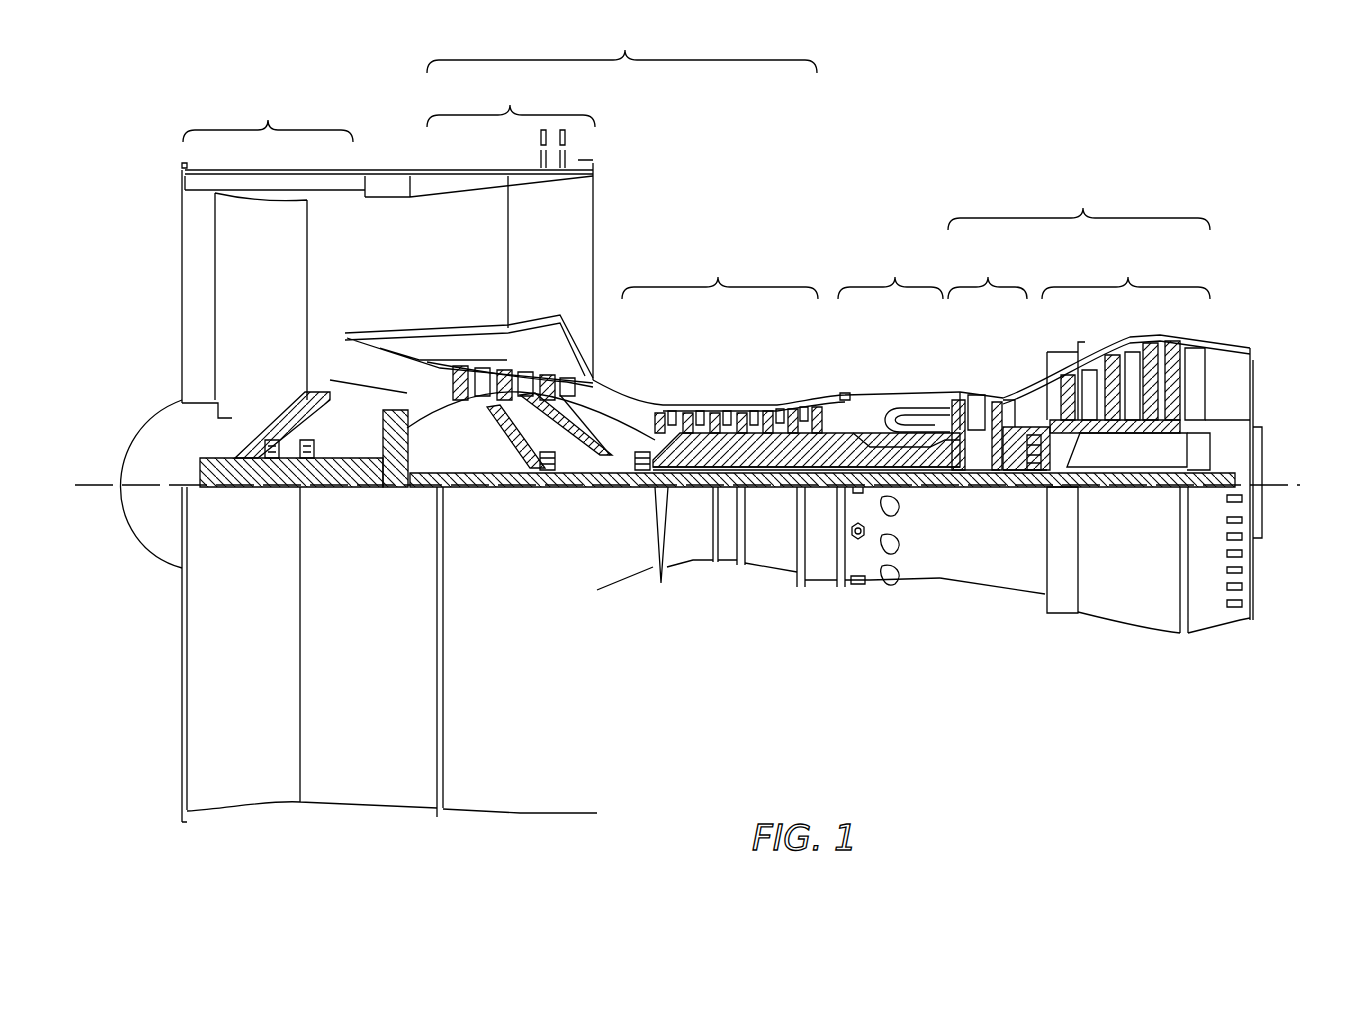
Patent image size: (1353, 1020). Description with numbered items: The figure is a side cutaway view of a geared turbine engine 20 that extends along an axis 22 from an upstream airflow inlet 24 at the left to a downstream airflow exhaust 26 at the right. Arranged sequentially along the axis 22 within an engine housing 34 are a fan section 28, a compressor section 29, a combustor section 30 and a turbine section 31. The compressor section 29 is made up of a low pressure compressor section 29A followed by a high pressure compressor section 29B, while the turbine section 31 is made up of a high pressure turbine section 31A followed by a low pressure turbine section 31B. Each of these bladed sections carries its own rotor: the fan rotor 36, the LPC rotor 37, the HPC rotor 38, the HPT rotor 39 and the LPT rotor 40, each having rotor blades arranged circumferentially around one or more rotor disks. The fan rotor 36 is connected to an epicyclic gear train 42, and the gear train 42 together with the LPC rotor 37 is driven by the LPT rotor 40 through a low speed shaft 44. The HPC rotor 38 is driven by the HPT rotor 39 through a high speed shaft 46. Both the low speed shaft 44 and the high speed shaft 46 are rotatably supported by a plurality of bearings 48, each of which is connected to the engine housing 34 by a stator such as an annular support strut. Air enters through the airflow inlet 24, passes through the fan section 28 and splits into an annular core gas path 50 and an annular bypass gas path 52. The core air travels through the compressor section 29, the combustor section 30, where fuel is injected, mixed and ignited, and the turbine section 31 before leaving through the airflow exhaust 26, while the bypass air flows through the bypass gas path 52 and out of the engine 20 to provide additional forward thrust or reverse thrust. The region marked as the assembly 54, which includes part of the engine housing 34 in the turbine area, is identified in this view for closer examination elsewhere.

The geared turbine engine 20 is at (137, 138).
The axis 22 is at (1290, 485).
The upstream airflow inlet 24 is at (182, 216).
The downstream airflow exhaust 26 is at (1252, 382).
The fan section 28 is at (268, 244).
The compressor section 29 is at (622, 46).
The low pressure compressor section 29A is at (511, 236).
The high pressure compressor section 29B is at (791, 358).
The combustor section 30 is at (899, 350).
The turbine section 31 is at (1079, 203).
The high pressure turbine section 31A is at (999, 360).
The low pressure turbine section 31B is at (1126, 342).
The engine housing 34 is at (822, 585).
The fan rotor 36 is at (215, 412).
The LPC rotor 37 is at (502, 435).
The HPC rotor 38 is at (765, 447).
The HPT rotor 39 is at (975, 465).
The LPT rotor 40 is at (1120, 428).
The gear train 42 is at (397, 485).
The low speed shaft 44 is at (1133, 485).
The high speed shaft 46 is at (905, 475).
The bearings 48 is at (313, 455).
The annular core gas path 50 is at (613, 405).
The annular bypass gas path 52 is at (415, 270).
The assembly 54 is at (1015, 388).